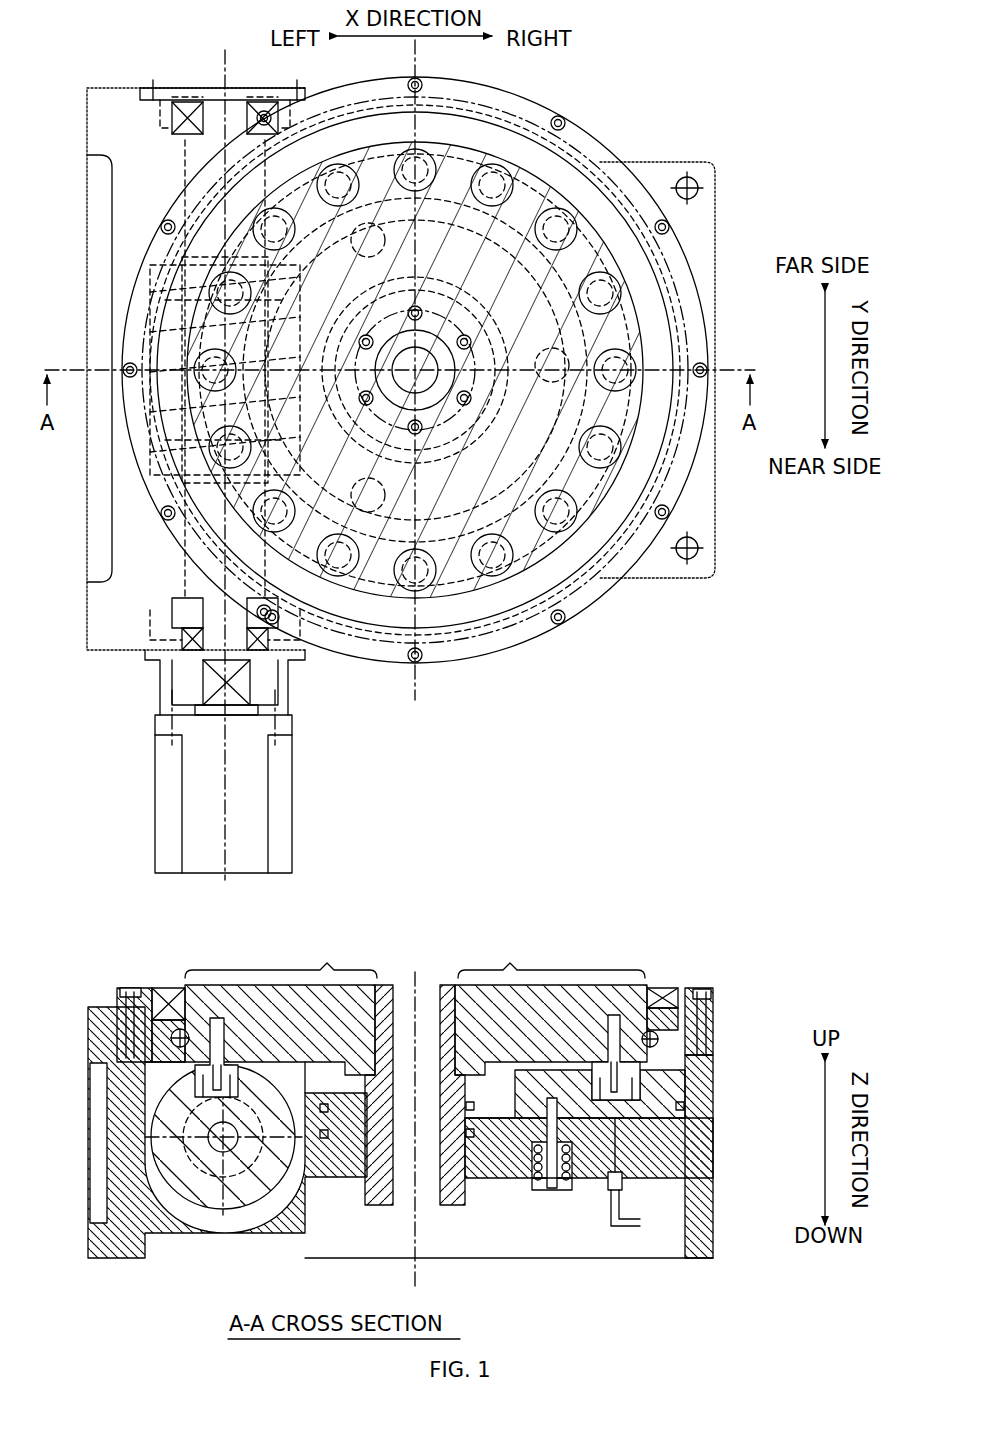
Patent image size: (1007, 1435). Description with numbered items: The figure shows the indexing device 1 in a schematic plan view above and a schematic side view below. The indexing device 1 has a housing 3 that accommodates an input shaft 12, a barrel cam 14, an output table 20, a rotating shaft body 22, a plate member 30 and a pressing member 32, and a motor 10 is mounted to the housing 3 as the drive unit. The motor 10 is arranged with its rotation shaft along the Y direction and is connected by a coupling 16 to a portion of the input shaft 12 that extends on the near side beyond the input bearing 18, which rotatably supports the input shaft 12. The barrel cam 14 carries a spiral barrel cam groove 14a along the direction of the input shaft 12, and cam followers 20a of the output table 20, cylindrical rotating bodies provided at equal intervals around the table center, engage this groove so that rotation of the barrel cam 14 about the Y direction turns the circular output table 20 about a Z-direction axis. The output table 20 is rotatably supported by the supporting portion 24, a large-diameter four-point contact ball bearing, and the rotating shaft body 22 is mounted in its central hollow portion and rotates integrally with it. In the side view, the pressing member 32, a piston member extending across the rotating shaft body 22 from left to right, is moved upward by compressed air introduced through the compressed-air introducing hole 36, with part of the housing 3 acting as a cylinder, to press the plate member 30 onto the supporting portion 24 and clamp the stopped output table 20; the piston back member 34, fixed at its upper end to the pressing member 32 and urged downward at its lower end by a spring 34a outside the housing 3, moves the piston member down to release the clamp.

The indexing device 1 is at (676, 80).
The housing 3 is at (710, 1148).
The motor 10 is at (292, 804).
The input shaft 12 is at (183, 158).
The barrel cam 14 is at (150, 345).
The barrel cam groove 14a is at (190, 455).
The coupling 16 is at (203, 681).
The input bearing 18 is at (185, 118).
The output table 20 is at (535, 192).
The cam followers 20a is at (575, 265).
The rotating shaft body 22 is at (460, 405).
The supporting portion 24 is at (653, 317).
The plate member 30 is at (690, 1037).
The pressing member 32 is at (652, 170).
The piston back member 34 is at (556, 1192).
The spring 34a is at (534, 1190).
The compressed-air introducing hole 36 is at (614, 1205).